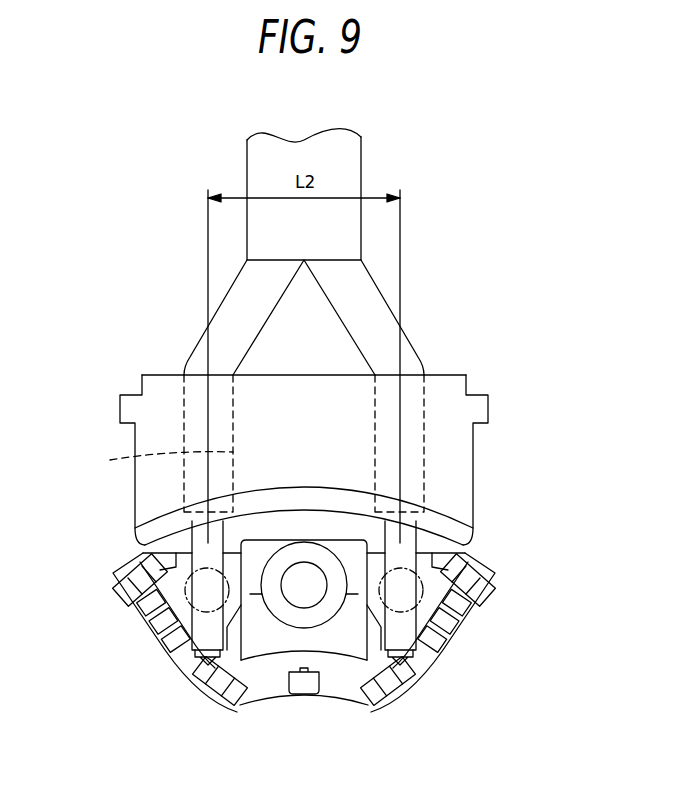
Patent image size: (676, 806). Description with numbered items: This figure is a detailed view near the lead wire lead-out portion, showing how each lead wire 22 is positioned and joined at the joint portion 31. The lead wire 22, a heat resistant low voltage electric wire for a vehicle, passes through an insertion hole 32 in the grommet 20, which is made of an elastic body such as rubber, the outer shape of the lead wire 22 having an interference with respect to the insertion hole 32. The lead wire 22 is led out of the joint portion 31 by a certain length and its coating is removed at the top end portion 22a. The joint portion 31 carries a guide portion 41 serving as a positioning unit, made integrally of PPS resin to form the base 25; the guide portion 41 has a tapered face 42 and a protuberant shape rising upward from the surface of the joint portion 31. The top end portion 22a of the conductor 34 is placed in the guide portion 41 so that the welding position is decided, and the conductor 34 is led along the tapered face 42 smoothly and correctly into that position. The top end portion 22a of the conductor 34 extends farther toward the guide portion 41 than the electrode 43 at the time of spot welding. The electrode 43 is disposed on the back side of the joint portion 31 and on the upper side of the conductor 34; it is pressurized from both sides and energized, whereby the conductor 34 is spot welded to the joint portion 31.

The grommet 20 is at (447, 388).
The lead wire 22 is at (233, 320).
The top end portion 22a is at (403, 632).
The base 25 is at (337, 663).
The joint portion 31 is at (150, 572).
The insertion hole 32 is at (110, 460).
The conductor 34 is at (438, 572).
The guide portion 41 is at (165, 648).
The tapered face 42 is at (252, 672).
The electrode 43 is at (185, 590).